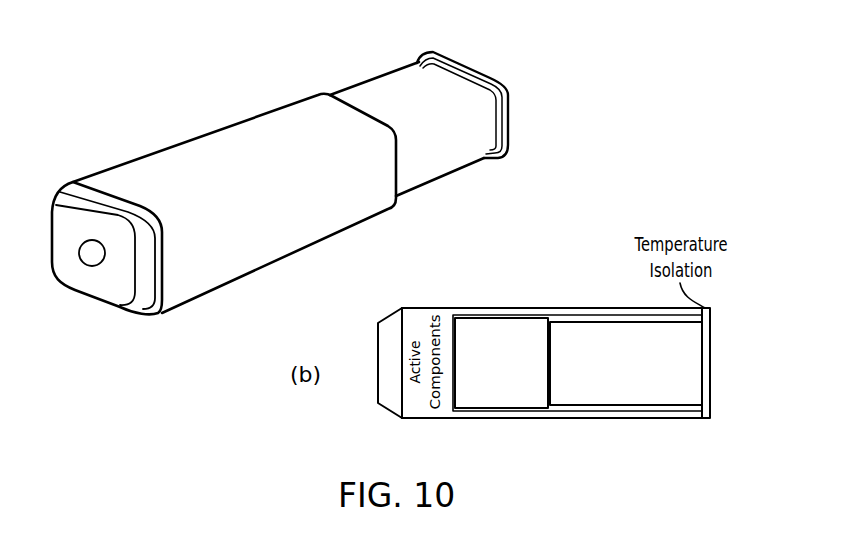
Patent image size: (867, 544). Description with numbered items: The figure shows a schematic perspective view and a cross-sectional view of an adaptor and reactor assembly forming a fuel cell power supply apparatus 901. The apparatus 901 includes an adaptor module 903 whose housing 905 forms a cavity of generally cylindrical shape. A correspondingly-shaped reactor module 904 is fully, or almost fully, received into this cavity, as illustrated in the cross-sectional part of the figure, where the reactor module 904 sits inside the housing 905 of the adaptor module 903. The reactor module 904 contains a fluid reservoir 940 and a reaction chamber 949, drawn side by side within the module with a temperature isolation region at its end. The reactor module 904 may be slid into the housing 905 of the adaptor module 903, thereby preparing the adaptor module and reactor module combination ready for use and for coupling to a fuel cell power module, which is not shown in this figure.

The fuel cell power supply apparatus 901 is at (165, 110).
The adaptor module 903 is at (105, 170).
The reactor module 904 is at (380, 75).
The housing 905 is at (283, 207).
The fluid reservoir 940 is at (502, 402).
The reaction chamber 949 is at (622, 390).